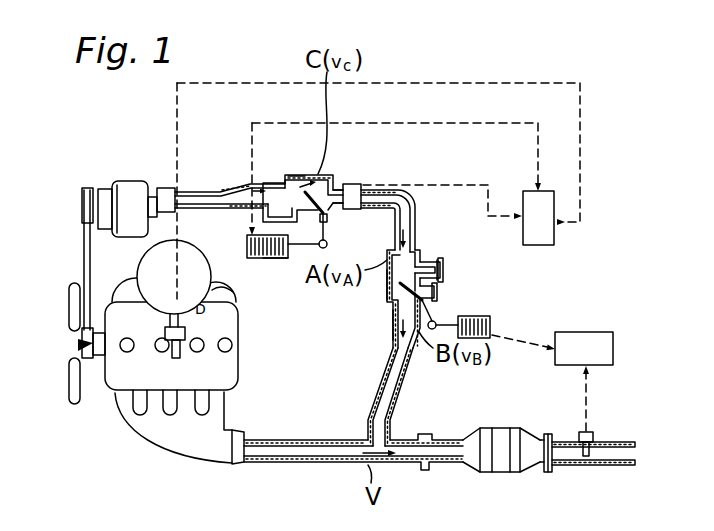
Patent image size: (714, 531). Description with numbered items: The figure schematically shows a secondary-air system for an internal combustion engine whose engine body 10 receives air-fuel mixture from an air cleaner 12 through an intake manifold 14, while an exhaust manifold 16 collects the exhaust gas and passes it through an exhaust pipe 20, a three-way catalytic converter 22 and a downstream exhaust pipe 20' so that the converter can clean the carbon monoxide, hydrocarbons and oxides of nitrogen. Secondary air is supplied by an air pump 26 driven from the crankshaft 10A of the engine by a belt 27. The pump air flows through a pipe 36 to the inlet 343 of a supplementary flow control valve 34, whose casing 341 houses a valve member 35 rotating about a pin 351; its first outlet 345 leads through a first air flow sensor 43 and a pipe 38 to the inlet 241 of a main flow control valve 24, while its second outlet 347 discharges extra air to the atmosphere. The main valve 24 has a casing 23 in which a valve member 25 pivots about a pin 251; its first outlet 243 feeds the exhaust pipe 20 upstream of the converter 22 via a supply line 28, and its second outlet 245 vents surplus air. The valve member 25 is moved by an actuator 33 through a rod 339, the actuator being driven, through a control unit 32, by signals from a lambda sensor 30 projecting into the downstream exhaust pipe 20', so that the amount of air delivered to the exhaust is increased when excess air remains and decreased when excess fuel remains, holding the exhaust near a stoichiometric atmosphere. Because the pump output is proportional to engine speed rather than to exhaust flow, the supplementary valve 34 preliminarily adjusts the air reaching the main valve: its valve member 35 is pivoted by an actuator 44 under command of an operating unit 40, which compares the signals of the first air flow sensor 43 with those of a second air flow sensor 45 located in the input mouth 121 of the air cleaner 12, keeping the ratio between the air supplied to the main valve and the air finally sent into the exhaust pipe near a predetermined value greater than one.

The engine body 10 is at (237, 322).
The crankshaft 10A is at (70, 344).
The air cleaner 12 is at (192, 254).
The input mouth 121 is at (176, 357).
The intake manifold 14 is at (232, 286).
The exhaust manifold 16 is at (222, 413).
The exhaust pipe 20 is at (353, 476).
The exhaust pipe 20' is at (594, 476).
The three-way catalytic converter 22 is at (500, 470).
The casing 23 is at (387, 290).
The main flow control valve 24 is at (376, 311).
The inlet 241 is at (424, 262).
The first outlet 243 is at (390, 333).
The second outlet 245 is at (443, 266).
The valve member 25 is at (440, 296).
The pin 251 is at (440, 288).
The air pump 26 is at (124, 182).
The belt 27 is at (84, 250).
The air supply pipe 28 is at (408, 372).
The lambda sensor 30 is at (600, 443).
The control unit 32 is at (613, 348).
The actuator 33 is at (490, 320).
The rod 339 is at (440, 300).
The supplementary flow control valve 34 is at (352, 153).
The casing 341 is at (296, 175).
The inlet 343 is at (278, 180).
The first outlet 345 is at (362, 180).
The second outlet 347 is at (247, 246).
The valve member 35 is at (330, 243).
The pin 351 is at (328, 212).
The pipe 36 is at (204, 189).
The pipe 38 is at (416, 200).
The operating unit 40 is at (538, 218).
The first air flow sensor 43 is at (398, 178).
The actuator 44 is at (270, 258).
The second air flow sensor 45 is at (186, 333).